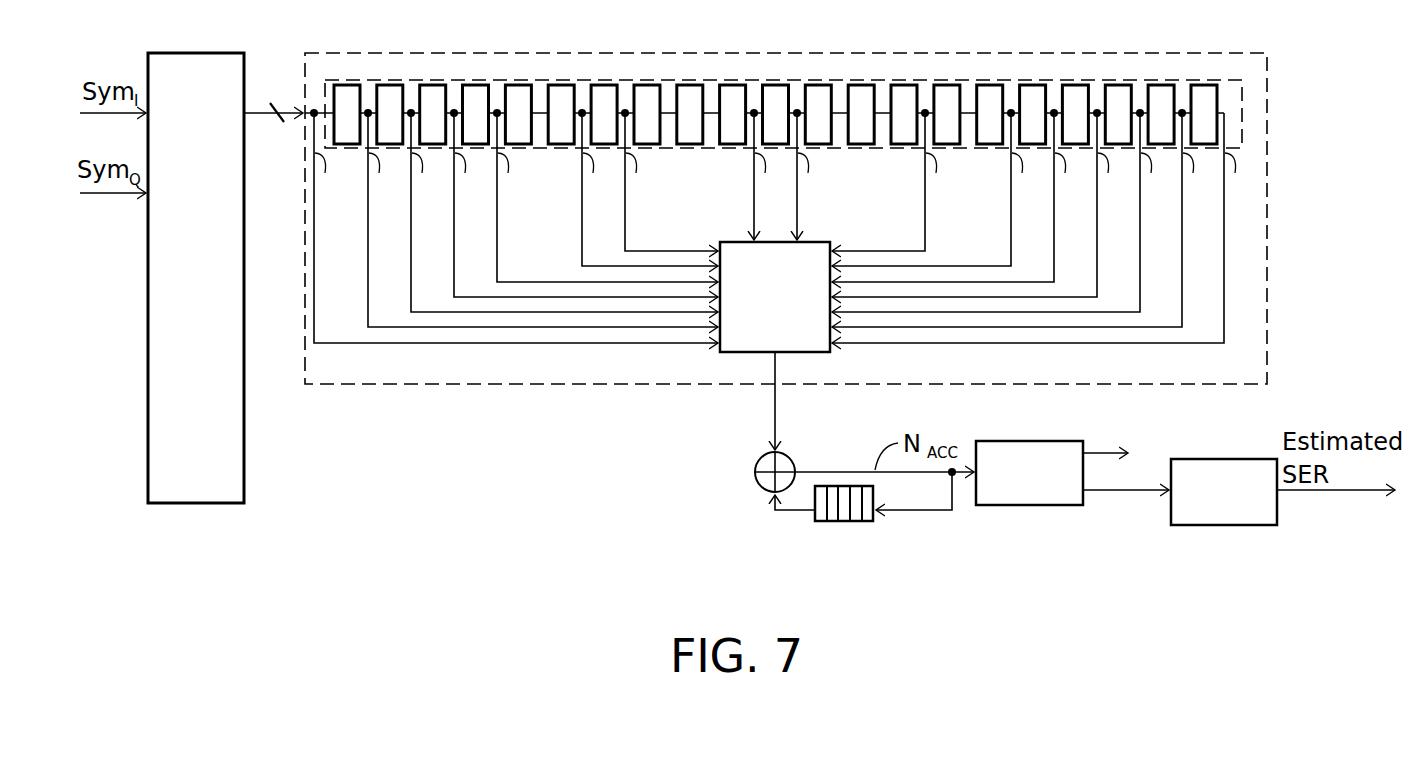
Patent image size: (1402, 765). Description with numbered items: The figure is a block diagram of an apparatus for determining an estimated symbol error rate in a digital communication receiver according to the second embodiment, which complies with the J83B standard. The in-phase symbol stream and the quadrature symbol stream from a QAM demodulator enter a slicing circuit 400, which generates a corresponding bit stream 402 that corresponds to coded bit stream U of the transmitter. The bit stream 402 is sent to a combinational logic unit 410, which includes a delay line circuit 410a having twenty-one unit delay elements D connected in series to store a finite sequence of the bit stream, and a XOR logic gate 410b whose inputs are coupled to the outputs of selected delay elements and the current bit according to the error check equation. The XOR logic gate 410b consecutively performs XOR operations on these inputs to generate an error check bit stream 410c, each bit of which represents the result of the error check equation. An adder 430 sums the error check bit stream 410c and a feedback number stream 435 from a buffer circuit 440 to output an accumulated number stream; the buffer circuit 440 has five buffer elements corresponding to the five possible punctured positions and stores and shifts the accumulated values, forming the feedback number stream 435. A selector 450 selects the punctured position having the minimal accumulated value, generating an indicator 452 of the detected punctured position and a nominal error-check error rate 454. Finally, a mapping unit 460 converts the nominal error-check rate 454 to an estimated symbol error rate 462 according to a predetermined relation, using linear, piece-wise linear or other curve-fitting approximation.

The slicing circuit 400 is at (185, 53).
The bit stream 402 is at (257, 116).
The combinational logic unit 410 is at (345, 53).
The delay line circuit 410a is at (1225, 78).
The XOR logic gate 410b is at (735, 354).
The error check bit stream 410c is at (772, 390).
The adder 430 is at (790, 457).
The feedback number stream 435 is at (800, 512).
The buffer circuit 440 is at (875, 492).
The selector 450 is at (1030, 440).
The indicator 452 is at (1103, 453).
The nominal error-check error rate 454 is at (1128, 492).
The mapping unit 460 is at (1225, 525).
The estimated symbol error rate 462 is at (1337, 492).